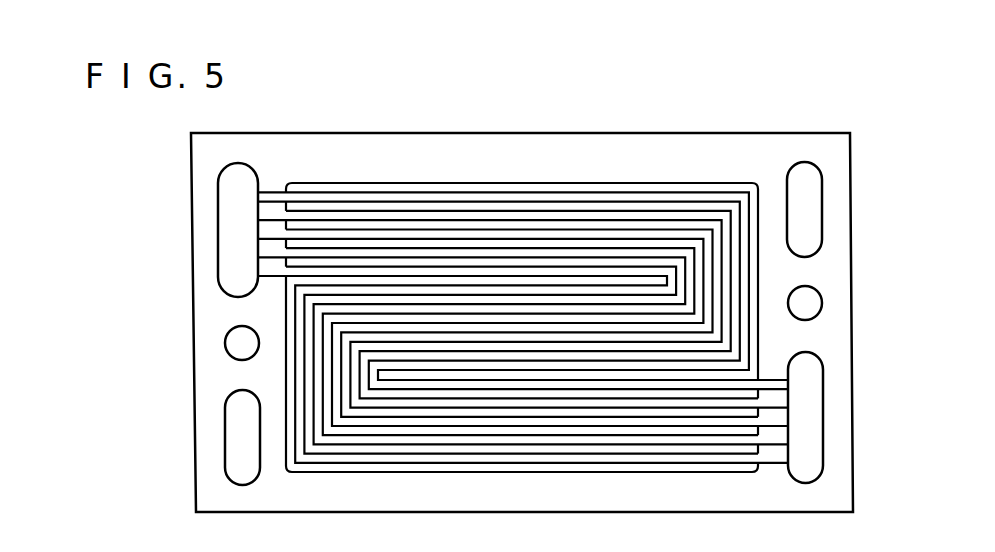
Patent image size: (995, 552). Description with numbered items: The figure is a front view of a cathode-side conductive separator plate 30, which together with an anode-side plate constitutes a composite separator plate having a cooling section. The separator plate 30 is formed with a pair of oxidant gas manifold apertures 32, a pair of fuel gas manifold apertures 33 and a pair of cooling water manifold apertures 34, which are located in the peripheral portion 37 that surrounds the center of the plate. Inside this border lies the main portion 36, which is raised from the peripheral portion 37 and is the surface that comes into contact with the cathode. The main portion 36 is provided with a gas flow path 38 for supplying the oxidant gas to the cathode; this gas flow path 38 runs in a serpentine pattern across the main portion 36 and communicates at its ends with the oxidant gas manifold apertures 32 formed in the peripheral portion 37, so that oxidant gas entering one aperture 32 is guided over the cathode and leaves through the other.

The cathode-side conductive separator plate 30 is at (500, 128).
The oxidant gas manifold apertures 32 is at (237, 208).
The fuel gas manifold apertures 33 is at (803, 210).
The cooling water manifold apertures 34 is at (805, 303).
The main portion 36 is at (652, 185).
The peripheral portion 37 is at (726, 149).
The gas flow path 38 is at (342, 196).